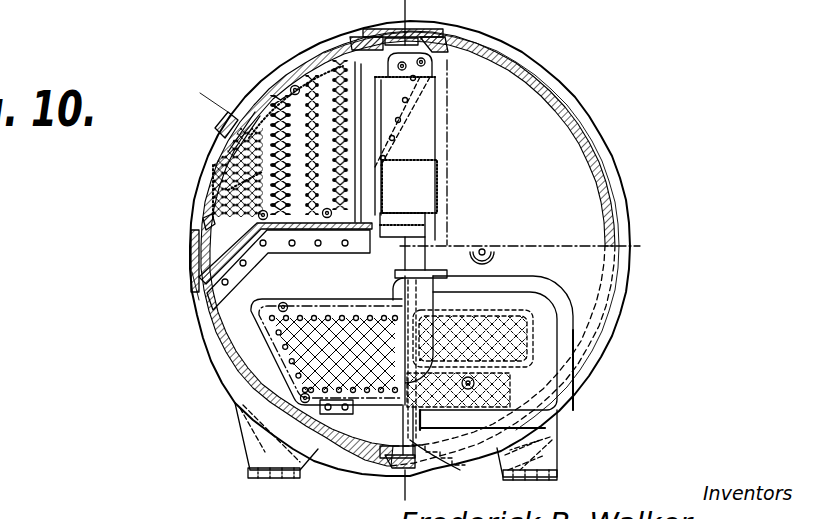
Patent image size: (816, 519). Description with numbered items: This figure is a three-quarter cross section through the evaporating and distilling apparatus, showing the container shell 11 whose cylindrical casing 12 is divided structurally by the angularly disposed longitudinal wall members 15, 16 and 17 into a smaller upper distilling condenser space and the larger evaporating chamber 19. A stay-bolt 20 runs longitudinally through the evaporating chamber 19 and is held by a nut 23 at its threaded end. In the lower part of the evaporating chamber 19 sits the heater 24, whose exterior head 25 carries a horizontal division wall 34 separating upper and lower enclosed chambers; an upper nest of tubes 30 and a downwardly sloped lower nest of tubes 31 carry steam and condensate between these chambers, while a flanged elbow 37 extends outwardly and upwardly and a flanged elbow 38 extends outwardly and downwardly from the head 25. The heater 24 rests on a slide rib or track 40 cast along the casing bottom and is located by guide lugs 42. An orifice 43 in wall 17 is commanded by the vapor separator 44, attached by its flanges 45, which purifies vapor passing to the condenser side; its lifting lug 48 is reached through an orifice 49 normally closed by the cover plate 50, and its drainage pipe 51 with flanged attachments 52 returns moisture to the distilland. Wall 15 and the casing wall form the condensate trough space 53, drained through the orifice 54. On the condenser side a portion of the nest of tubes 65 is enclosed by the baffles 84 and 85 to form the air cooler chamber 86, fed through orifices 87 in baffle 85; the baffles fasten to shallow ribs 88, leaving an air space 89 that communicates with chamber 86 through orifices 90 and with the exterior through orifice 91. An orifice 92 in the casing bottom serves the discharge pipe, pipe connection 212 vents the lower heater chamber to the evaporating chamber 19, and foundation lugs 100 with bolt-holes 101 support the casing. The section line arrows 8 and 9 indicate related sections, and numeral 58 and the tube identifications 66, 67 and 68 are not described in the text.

The section line 8- 8 is at (421, 4).
The section line 9- 9 is at (171, 122).
The container shell 11 is at (622, 123).
The cylindrical casing 12 is at (533, 110).
The longitudinal wall member 15 is at (243, 258).
The longitudinal wall member 16 is at (303, 223).
The longitudinal wall member 17 is at (433, 107).
The evaporating chamber 19 is at (542, 100).
The stay-bolt 20 is at (480, 249).
The nut 23 is at (487, 257).
The heater 24 is at (530, 338).
The exterior head 25 is at (510, 375).
The upper nest of tubes 30 is at (533, 323).
The lower nest of tubes 31 is at (547, 428).
The division wall 34 is at (573, 392).
The flanged elbow 37 is at (393, 298).
The flanged elbow 38 is at (437, 463).
The slide rib or track 40 is at (307, 437).
The guide lug 42 is at (343, 414).
The orifice 43 is at (423, 127).
The vapor separator 44 is at (423, 157).
The flange 45 is at (440, 66).
The lifting lug 48 is at (447, 44).
The orifice 49 is at (395, 29).
The cover plate 50 is at (443, 28).
The drainage pipe 51 is at (405, 272).
The flanged attachment 52 is at (427, 235).
The trough space 53 is at (205, 253).
The orifice 54 is at (188, 275).
The wedge block 58 is at (210, 225).
The nest of tubes 65 is at (233, 140).
The tube column 66 is at (280, 100).
The tube column 67 is at (305, 80).
The tube column 68 is at (337, 68).
The baffle 84 is at (215, 172).
The baffle 85 is at (265, 98).
The air cooler chamber 86 is at (225, 162).
The orifice 87 is at (247, 217).
The rib 88 is at (255, 100).
The air space 89 is at (213, 187).
The orifice 90 is at (237, 120).
The orifice 91 is at (205, 95).
The orifice 92 is at (398, 468).
The foundation lug 100 is at (253, 447).
The bolt-hole 101 is at (287, 480).
The pipe connection 212 is at (497, 463).